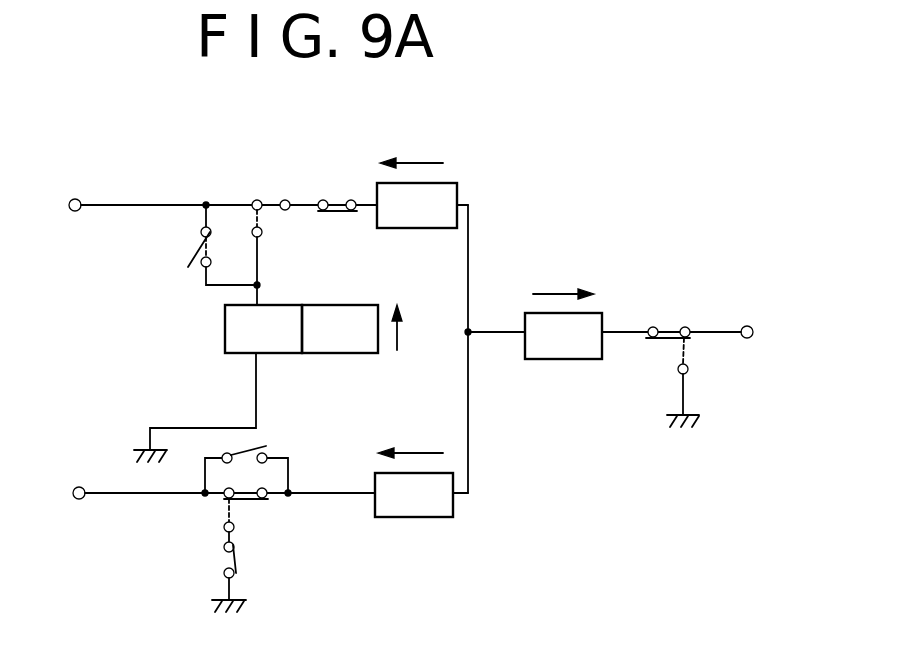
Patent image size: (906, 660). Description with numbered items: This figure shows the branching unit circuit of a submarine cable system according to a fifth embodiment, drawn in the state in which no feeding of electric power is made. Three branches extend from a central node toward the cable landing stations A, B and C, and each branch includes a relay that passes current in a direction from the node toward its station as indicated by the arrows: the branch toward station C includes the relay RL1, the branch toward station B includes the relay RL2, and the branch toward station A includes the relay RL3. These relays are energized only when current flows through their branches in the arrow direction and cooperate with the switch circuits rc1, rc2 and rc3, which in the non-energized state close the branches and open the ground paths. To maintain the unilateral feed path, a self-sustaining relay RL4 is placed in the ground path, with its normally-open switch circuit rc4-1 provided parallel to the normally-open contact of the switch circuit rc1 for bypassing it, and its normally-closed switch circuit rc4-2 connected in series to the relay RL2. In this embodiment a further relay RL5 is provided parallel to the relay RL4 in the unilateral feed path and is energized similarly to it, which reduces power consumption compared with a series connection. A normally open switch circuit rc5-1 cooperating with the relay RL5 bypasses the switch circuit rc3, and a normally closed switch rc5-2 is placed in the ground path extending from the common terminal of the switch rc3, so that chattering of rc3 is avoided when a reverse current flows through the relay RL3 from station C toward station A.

The cable landing station A is at (759, 333).
The cable landing station B is at (62, 206).
The cable landing station C is at (66, 494).
The relay RL1 is at (414, 495).
The relay RL2 is at (417, 205).
The relay RL3 is at (563, 336).
The self-sustaining relay RL4 is at (263, 329).
The relay RL5 is at (340, 329).
The switch circuit rc1 is at (277, 252).
The switch circuit rc2 is at (692, 371).
The switch circuit rc3 is at (255, 510).
The normally-open switch circuit rc4-1 is at (189, 245).
The normally-closed switch circuit rc4-2 is at (326, 227).
The normally open switch circuit rc5-1 is at (271, 457).
The normally closed switch rc5-2 is at (275, 566).